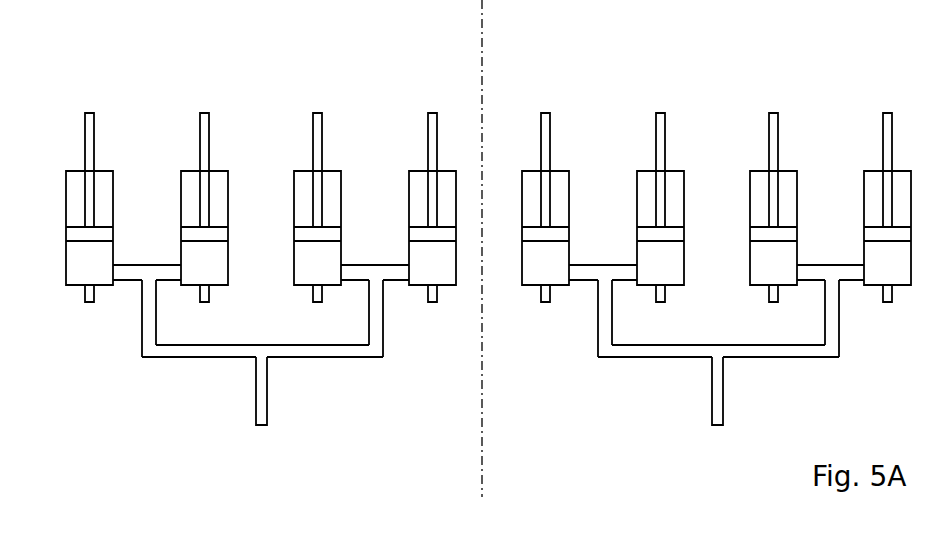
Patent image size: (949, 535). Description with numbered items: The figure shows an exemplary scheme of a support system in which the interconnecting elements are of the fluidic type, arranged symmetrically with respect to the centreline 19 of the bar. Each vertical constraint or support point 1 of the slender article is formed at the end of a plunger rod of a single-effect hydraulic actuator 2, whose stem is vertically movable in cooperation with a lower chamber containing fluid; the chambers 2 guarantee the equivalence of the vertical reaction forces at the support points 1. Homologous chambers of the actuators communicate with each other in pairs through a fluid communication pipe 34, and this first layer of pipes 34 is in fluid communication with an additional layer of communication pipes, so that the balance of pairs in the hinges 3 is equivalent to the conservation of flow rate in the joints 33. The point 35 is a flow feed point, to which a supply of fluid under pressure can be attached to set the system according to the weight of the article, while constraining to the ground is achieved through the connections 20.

The vertical constraint or support point 1 is at (82, 112).
The single-effect hydraulic actuator 2 is at (92, 252).
The joint point 3 is at (363, 287).
The centreline 19 is at (470, 478).
The connection 20 is at (77, 297).
The joint 33 is at (137, 284).
The fluid communication pipe 34 is at (160, 268).
The flow feed point 35 is at (250, 428).